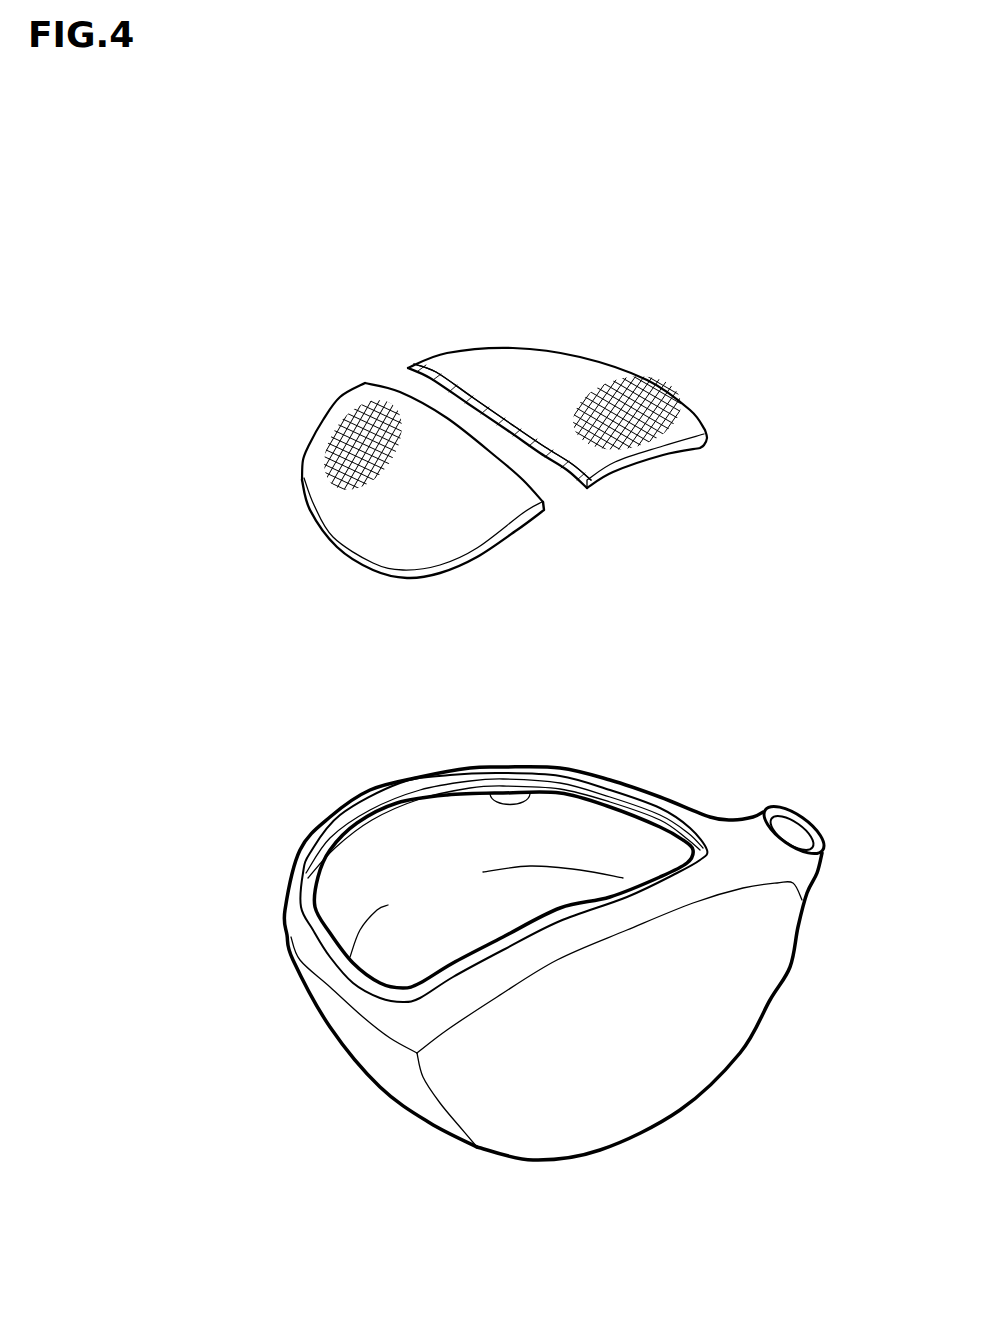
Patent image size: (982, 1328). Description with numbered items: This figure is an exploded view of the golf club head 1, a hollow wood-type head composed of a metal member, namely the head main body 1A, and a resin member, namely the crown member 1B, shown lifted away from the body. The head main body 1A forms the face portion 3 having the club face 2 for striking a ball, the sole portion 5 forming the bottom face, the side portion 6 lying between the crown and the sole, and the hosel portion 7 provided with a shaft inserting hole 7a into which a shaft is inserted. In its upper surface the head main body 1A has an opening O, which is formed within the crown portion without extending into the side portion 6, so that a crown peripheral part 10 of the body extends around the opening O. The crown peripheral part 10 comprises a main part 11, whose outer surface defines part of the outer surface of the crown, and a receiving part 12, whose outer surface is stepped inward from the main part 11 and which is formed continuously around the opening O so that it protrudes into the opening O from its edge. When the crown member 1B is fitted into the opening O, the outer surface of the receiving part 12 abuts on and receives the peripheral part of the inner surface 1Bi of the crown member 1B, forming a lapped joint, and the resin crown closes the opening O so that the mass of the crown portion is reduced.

The golf club head 1 is at (165, 658).
The head main body 1A is at (320, 822).
The crown member 1B is at (303, 532).
The inner surface of the crown member 1Bi is at (561, 467).
The club face 2 is at (722, 985).
The face portion 3 is at (620, 1055).
The sole portion 5 is at (437, 915).
The side portion 6 is at (393, 1068).
The hosel portion 7 is at (763, 810).
The shaft inserting hole 7a is at (790, 838).
The crown peripheral part 10 is at (155, 927).
The main part 11 is at (305, 940).
The receiving part 12 is at (358, 975).
The opening O is at (540, 795).